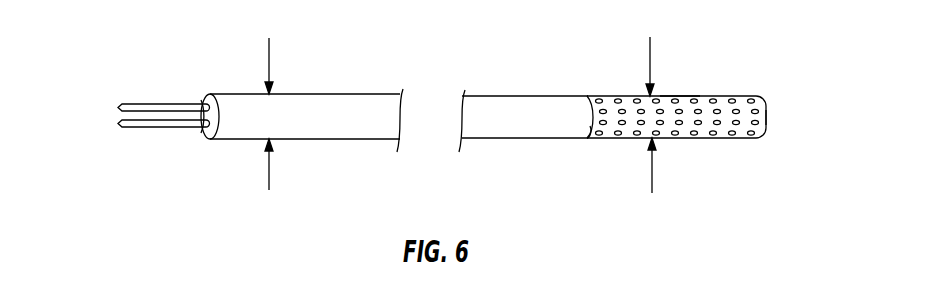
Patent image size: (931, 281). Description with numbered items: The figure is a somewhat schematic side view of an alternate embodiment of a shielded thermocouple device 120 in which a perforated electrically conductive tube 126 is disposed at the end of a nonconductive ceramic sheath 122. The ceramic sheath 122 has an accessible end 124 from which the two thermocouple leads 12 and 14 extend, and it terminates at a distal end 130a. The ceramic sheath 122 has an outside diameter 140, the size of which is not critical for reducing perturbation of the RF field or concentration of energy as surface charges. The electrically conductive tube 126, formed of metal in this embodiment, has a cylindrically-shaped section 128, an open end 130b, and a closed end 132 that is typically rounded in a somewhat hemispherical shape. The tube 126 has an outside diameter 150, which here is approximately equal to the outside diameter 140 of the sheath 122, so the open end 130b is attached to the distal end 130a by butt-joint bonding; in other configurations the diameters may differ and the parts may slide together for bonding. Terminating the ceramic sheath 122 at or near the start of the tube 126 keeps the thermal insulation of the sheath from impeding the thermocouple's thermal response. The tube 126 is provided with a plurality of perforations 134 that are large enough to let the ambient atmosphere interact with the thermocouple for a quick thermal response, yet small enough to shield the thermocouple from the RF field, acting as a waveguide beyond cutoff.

The thermocouple lead 12 is at (168, 105).
The thermocouple lead 14 is at (170, 130).
The shielded thermocouple device 120 is at (349, 76).
The nonconductive ceramic sheath 122 is at (517, 96).
The accessible end 124 is at (203, 92).
The electrically conductive tube 126 is at (748, 93).
The cylindrically-shaped section 128 is at (672, 93).
The distal end 130a is at (587, 97).
The open end 130b is at (597, 140).
The closed end 132 is at (767, 117).
The perforations 134 is at (743, 126).
The outside diameter 140 is at (270, 130).
The outside diameter 150 is at (650, 102).